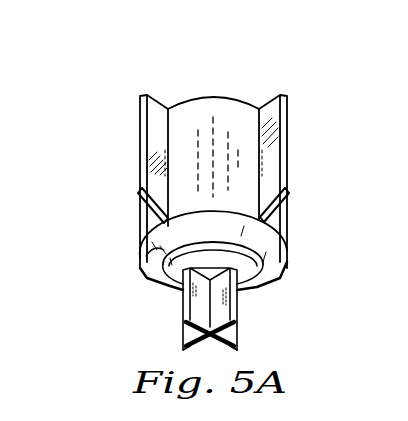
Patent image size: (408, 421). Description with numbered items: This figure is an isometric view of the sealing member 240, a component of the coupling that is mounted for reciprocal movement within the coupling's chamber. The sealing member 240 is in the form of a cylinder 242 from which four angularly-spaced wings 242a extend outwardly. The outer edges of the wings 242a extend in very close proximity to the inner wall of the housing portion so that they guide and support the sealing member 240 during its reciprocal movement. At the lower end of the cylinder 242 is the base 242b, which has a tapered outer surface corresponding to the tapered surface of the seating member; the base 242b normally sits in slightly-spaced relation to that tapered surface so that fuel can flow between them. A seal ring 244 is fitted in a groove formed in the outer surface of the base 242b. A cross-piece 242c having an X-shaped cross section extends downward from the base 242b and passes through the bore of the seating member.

The sealing member 240 is at (113, 200).
The cylinder 242 is at (237, 117).
The wings 242a is at (166, 107).
The base 242b is at (277, 262).
The cross-piece 242c is at (237, 308).
The seal ring 244 is at (152, 250).